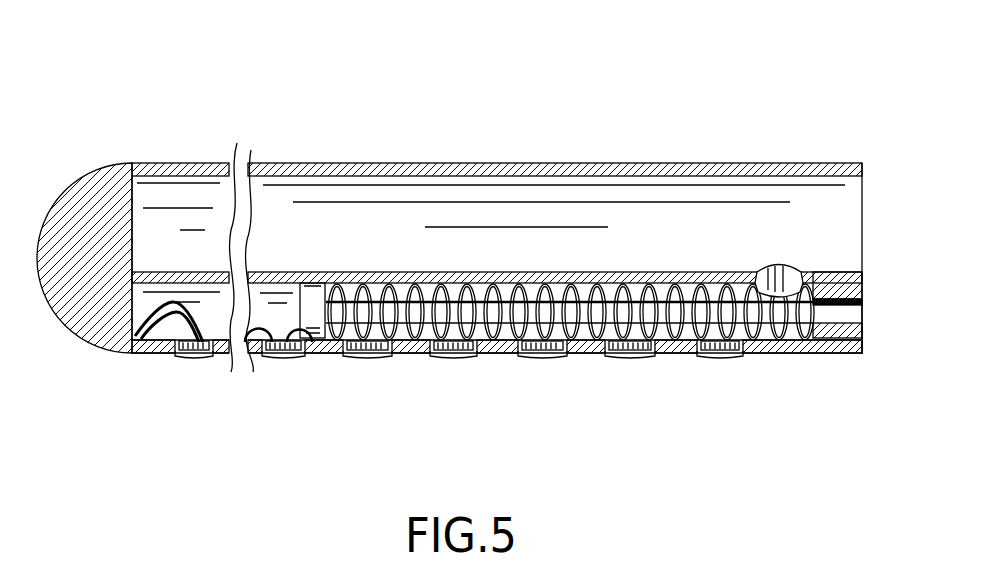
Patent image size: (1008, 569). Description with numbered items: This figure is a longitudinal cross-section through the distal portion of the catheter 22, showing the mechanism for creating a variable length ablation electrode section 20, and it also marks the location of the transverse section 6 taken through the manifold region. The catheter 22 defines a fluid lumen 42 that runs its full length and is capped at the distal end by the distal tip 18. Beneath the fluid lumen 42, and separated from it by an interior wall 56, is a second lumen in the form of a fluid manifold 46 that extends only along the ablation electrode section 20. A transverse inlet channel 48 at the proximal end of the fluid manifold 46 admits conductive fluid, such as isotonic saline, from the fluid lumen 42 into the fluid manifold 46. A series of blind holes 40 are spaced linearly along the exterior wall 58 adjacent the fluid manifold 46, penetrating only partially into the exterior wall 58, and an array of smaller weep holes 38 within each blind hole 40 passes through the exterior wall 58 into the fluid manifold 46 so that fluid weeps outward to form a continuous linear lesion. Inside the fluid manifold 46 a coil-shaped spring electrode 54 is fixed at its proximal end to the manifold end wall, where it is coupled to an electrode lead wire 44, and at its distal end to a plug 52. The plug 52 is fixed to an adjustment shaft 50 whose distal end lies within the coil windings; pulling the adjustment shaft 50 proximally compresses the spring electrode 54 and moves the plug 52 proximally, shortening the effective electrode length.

The section line 6- 6 is at (645, 145).
The distal tip 18 is at (72, 197).
The ablation electrode section 20 is at (280, 112).
The catheter 22 is at (350, 163).
The weep holes 38 is at (152, 326).
The blind holes 40 is at (258, 357).
The fluid lumen 42 is at (471, 202).
The electrode lead wire 44 is at (864, 342).
The fluid manifold 46 is at (204, 296).
The transverse inlet channel 48 is at (788, 277).
The adjustment shaft 50 is at (838, 315).
The plug 52 is at (313, 302).
The spring electrode 54 is at (568, 342).
The interior wall 56 is at (568, 278).
The exterior wall 58 is at (412, 352).